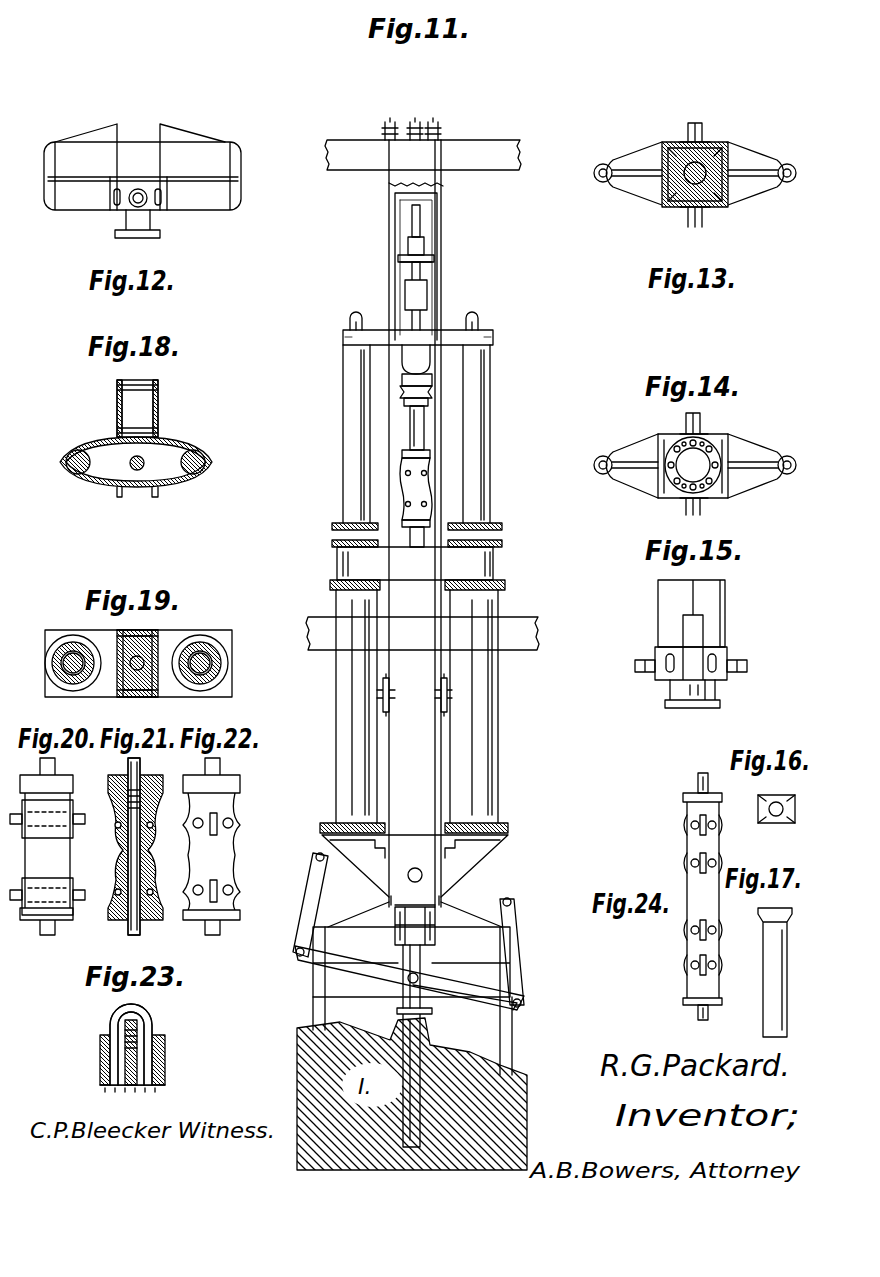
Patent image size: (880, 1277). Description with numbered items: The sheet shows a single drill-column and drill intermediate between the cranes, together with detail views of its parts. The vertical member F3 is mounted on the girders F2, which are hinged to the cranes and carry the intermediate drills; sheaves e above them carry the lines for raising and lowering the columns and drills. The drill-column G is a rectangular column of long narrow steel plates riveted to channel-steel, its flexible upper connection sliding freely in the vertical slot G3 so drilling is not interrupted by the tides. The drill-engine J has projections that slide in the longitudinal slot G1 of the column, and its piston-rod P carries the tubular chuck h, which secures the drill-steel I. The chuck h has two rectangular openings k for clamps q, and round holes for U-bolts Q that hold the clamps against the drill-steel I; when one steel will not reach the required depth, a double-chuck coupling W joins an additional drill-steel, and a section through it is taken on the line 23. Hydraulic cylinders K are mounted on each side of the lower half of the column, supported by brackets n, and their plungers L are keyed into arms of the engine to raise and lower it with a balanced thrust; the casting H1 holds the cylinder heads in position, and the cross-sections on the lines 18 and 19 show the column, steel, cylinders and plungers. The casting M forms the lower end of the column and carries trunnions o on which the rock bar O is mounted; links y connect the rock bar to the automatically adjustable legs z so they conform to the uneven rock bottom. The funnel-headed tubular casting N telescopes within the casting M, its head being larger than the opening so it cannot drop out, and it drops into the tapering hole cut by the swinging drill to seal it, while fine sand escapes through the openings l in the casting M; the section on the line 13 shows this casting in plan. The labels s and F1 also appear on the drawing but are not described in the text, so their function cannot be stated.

In FIG. 11, the sheaves e is at (435, 116).
In FIG. 11, the girders F2 is at (505, 175).
In FIG. 11, the vertical member F3 is at (385, 220).
In FIG. 11, the vertical slot G3 is at (410, 190).
In FIG. 11, the longitudinal slot G1 is at (422, 228).
In FIG. 11, the drill-engine J is at (425, 292).
In FIG. 11, the cross bar s is at (515, 338).
In FIG. 11, the plungers L is at (520, 382).
In FIG. 11, the piston-rod P is at (426, 426).
In FIG. 22, the piston-rod P is at (222, 765).
In FIG. 11, the tubular chuck h is at (432, 488).
In FIG. 20, the tubular chuck h is at (53, 846).
In FIG. 21, the tubular chuck h is at (143, 846).
In FIG. 11, the drill-steel I is at (405, 545).
In FIG. 18, the drill-steel I is at (145, 468).
In FIG. 19, the drill-steel I is at (130, 655).
In FIG. 22, the drill-steel I is at (222, 930).
In FIG. 24, the drill-steel I is at (690, 1012).
In FIG. 11, the section line 18 is at (545, 560).
In FIG. 11, the hydraulic cylinders K is at (338, 710).
In FIG. 11, the lever F1 is at (448, 703).
In FIG. 11, the section line 19 is at (572, 830).
In FIG. 11, the brackets n is at (527, 875).
In FIG. 19, the brackets n is at (55, 690).
In FIG. 11, the section line 13 is at (470, 897).
In FIG. 11, the telescoping casting N is at (398, 1000).
In FIG. 13, the telescoping casting N is at (720, 165).
In FIG. 16, the telescoping casting N is at (788, 830).
In FIG. 17, the telescoping casting N is at (760, 1020).
In FIG. 11, the links y is at (515, 940).
In FIG. 11, the adjustable legs z is at (520, 1052).
In FIG. 11, the casting M is at (310, 985).
In FIG. 12, the casting M is at (205, 215).
In FIG. 13, the casting M is at (640, 188).
In FIG. 14, the casting M is at (632, 478).
In FIG. 15, the casting M is at (726, 620).
In FIG. 11, the rock bar O is at (430, 990).
In FIG. 12, the trunnions o is at (152, 200).
In FIG. 13, the trunnions o is at (660, 238).
In FIG. 14, the trunnions o is at (668, 522).
In FIG. 15, the trunnions o is at (748, 666).
In FIG. 12, the openings l is at (118, 205).
In FIG. 14, the openings l is at (708, 448).
In FIG. 15, the openings l is at (668, 675).
In FIG. 18, the drill-column G is at (115, 405).
In FIG. 19, the drill-column G is at (148, 628).
In FIG. 18, the casting H1 is at (185, 440).
In FIG. 22, the rectangular openings k is at (218, 830).
In FIG. 24, the rectangular openings k is at (698, 855).
In FIG. 23, the U-bolt Q is at (154, 1022).
In FIG. 23, the clamp q is at (115, 1024).
In FIG. 24, the double-chuck coupling W is at (686, 940).
In FIG. 24, the section line 23 is at (740, 965).